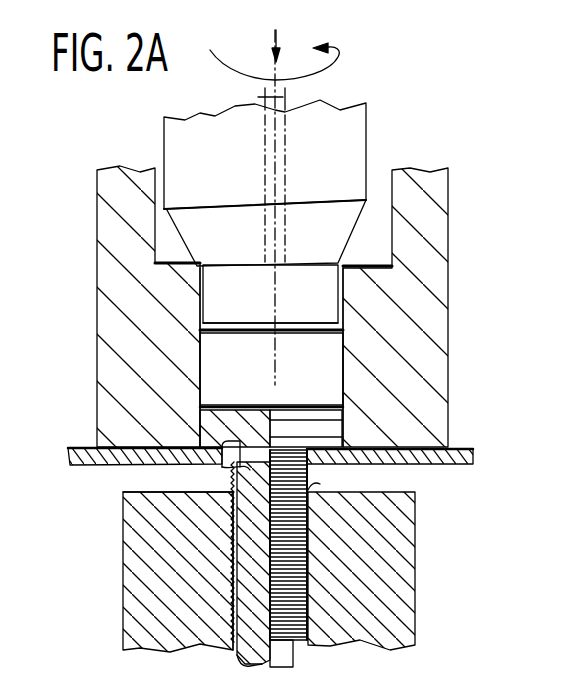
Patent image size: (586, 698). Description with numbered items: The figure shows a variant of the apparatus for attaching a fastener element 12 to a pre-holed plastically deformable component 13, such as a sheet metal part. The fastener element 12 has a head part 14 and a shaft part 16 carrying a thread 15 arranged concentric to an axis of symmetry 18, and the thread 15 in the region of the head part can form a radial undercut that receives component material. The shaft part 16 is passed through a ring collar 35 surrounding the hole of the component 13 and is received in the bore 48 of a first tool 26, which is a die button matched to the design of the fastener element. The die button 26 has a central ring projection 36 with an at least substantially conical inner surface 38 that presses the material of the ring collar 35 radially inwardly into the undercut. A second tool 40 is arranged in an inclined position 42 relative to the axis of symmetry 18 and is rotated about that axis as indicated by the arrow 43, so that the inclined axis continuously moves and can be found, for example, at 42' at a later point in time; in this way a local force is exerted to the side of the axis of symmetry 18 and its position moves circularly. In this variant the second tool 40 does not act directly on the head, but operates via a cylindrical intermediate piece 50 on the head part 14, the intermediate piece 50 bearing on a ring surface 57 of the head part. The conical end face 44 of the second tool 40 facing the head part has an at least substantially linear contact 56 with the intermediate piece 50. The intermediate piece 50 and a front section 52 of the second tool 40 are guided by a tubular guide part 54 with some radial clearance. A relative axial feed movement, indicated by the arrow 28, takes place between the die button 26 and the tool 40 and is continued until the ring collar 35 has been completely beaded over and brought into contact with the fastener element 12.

The fastener element 12 is at (298, 657).
The pre-holed plastically deformable component 13 is at (470, 453).
The head part 14 is at (330, 432).
The thread 15 is at (216, 598).
The shaft part 16 is at (245, 664).
The axis of symmetry 18 is at (258, 97).
The first tool 26 is at (400, 588).
The arrow 28 is at (276, 30).
The ring collar 35 is at (222, 470).
The central ring projection 36 is at (312, 491).
The conical inner surface 38 is at (222, 500).
The second tool 40 is at (366, 143).
The inclined position 42 is at (235, 188).
The inclined axis at a later point in time 42' is at (317, 188).
The arrow 43 is at (341, 48).
The conical end face 44 is at (310, 322).
The bore of the die button 48 is at (306, 549).
The cylindrical intermediate piece 50 is at (330, 383).
The front section 52 is at (345, 300).
The tubular guide part 54 is at (432, 227).
The linear contact 56 is at (235, 322).
The ring surface 57 is at (207, 405).